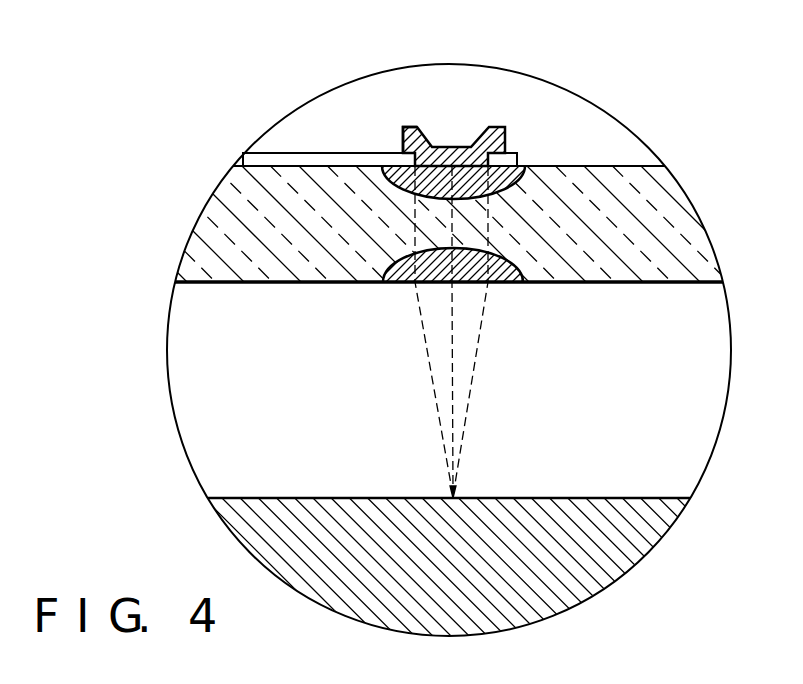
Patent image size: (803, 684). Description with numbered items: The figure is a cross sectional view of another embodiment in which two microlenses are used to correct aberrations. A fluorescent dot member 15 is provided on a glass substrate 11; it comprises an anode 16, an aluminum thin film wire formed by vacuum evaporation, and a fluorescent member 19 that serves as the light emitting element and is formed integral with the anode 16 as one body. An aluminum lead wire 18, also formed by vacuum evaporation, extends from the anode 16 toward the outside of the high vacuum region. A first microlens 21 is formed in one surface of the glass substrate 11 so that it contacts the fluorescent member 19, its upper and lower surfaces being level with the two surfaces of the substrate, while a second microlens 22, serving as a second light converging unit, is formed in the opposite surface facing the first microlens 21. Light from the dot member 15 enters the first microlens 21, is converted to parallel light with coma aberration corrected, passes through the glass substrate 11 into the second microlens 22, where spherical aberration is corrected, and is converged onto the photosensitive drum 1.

The photosensitive drum 1 is at (589, 498).
The glass substrate 11 is at (226, 210).
The fluorescent dot member 15 is at (500, 103).
The anode 16 is at (514, 158).
The aluminum lead wire 18 is at (302, 156).
The fluorescent member 19 is at (412, 127).
The first microlens 21 is at (500, 179).
The second microlens 22 is at (507, 280).